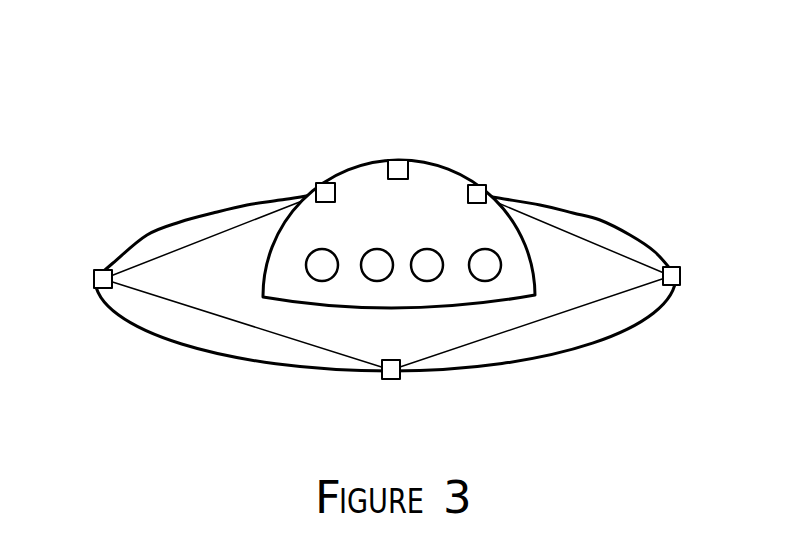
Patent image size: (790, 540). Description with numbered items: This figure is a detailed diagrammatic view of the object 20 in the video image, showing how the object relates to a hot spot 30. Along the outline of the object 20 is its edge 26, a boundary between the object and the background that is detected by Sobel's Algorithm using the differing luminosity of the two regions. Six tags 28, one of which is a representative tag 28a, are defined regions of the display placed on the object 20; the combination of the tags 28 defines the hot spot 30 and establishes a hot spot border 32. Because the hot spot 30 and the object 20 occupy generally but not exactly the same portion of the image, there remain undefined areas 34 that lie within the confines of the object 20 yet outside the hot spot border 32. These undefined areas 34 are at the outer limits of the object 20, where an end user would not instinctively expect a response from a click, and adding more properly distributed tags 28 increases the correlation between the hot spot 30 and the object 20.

The object 20 is at (167, 55).
The edge 26 is at (643, 238).
The tags 28 is at (398, 160).
The representative tag 28a is at (382, 372).
The hot spot 30 is at (587, 286).
The hot spot border 32 is at (240, 345).
The undefined areas 34 is at (598, 231).